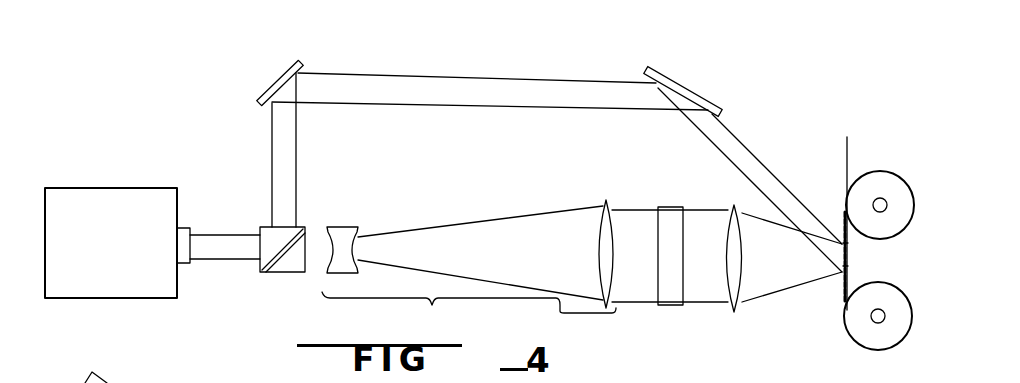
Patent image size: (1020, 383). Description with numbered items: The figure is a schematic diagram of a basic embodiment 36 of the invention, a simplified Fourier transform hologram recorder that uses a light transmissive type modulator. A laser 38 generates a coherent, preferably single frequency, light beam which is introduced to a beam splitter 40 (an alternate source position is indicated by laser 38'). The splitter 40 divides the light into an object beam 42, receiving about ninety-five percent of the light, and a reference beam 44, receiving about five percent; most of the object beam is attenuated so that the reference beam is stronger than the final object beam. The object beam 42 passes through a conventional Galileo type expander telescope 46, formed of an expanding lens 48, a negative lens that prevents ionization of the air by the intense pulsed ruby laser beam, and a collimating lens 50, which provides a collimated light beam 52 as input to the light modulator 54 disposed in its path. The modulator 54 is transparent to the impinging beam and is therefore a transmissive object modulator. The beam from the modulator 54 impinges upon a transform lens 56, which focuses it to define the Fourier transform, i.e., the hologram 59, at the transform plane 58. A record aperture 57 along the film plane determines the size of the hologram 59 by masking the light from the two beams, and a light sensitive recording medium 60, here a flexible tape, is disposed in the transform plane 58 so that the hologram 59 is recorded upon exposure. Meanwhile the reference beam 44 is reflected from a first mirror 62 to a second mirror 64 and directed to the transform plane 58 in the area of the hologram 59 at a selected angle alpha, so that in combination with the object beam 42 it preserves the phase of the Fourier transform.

The basic embodiment 36 is at (595, 61).
The laser 38 is at (117, 219).
The laser (alternate) 38' is at (134, 371).
The beam splitter 40 is at (262, 230).
The object beam 42 is at (403, 231).
The reference beam 44 is at (484, 77).
The expander telescope 46 is at (469, 313).
The expanding lens 48 is at (345, 228).
The collimating lens 50 is at (600, 206).
The collimated light beam 52 is at (630, 205).
The light modulator 54 is at (672, 213).
The transform lens 56 is at (735, 208).
The record aperture 57 is at (842, 302).
The transform plane 58 is at (848, 138).
The hologram 59 is at (847, 266).
The light sensitive recording medium 60 is at (847, 245).
The first mirror 62 is at (271, 88).
The second mirror 64 is at (697, 97).